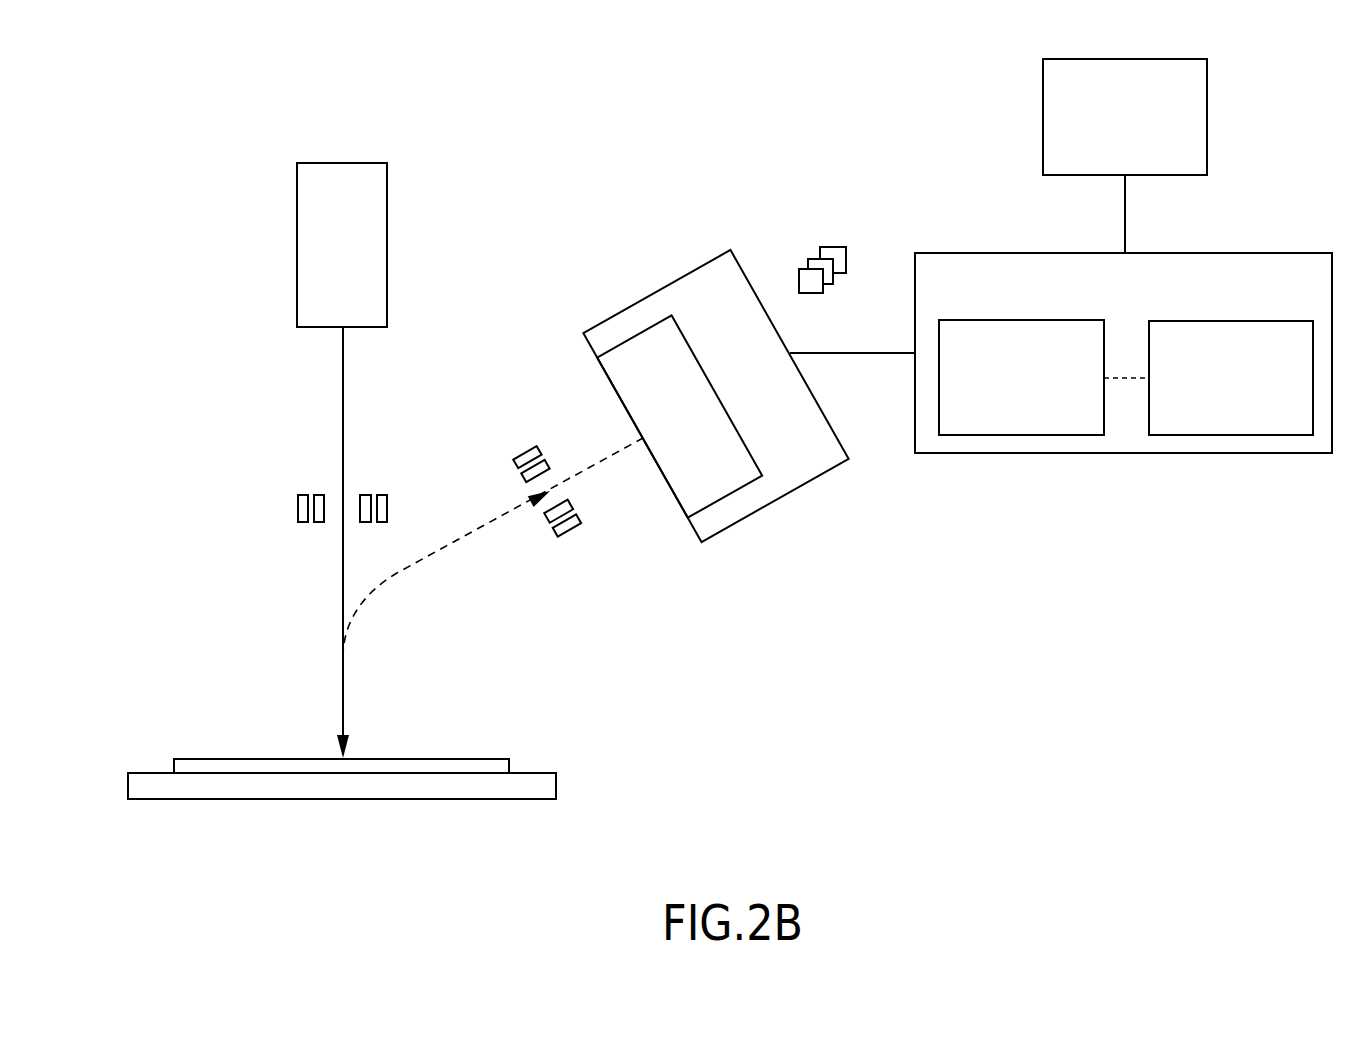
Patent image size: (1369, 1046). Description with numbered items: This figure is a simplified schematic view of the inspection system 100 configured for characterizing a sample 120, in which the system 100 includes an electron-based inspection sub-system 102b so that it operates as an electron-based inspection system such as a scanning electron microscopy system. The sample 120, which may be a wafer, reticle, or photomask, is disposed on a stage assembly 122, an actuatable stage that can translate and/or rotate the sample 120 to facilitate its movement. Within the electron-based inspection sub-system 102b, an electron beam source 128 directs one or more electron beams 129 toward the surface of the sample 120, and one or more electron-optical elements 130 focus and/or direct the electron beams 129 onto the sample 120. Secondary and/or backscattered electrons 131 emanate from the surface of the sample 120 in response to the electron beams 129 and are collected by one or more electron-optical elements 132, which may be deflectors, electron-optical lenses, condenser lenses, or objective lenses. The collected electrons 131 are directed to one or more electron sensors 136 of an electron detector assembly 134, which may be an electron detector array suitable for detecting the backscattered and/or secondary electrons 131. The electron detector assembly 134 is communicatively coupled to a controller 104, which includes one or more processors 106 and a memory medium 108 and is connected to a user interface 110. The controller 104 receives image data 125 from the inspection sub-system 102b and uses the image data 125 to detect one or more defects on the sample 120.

The inspection system 100 is at (228, 108).
The electron-based inspection sub-system 102b is at (165, 357).
The controller 104 is at (958, 281).
The processors 106 is at (983, 347).
The memory medium 108 is at (1192, 348).
The user interface 110 is at (1088, 86).
The sample 120 is at (510, 770).
The stage assembly 122 is at (556, 790).
The image data 125 is at (779, 253).
The electron beam source 128 is at (362, 256).
The electron beams 129 is at (343, 390).
The electron-optical elements 130 is at (298, 503).
The secondary and/or backscattered electrons 131 is at (388, 583).
The electron-optical elements 132 is at (572, 531).
The electron detector assembly 134 is at (749, 396).
The electron sensors 136 is at (679, 416).